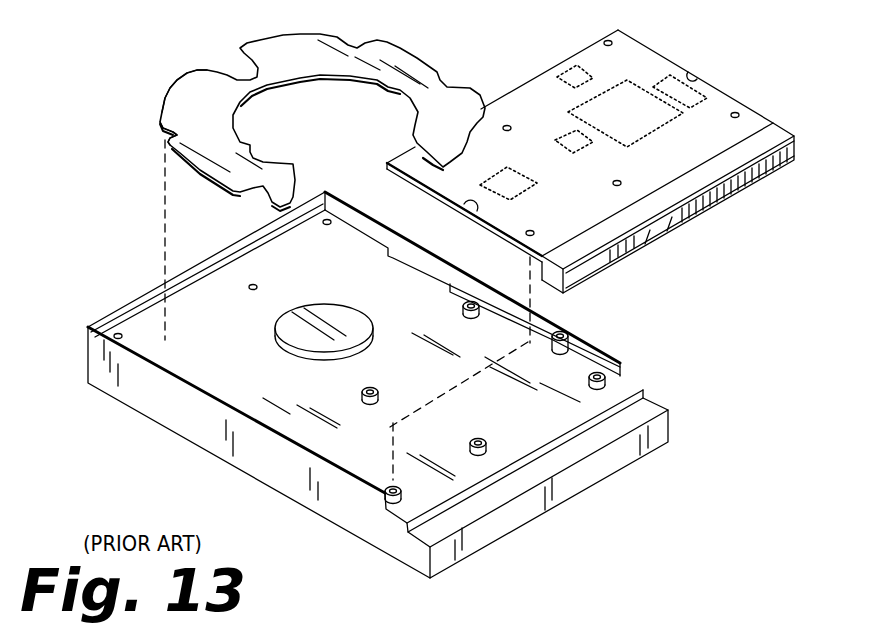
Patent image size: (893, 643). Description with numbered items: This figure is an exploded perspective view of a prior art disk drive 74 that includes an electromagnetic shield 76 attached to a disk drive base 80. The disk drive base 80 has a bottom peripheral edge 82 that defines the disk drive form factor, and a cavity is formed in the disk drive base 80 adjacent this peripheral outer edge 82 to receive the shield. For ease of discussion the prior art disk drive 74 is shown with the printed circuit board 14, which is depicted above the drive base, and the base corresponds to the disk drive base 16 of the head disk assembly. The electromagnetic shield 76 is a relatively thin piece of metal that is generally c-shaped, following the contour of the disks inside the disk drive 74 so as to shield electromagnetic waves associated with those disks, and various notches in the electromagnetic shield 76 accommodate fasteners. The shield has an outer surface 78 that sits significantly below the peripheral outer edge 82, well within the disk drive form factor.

The printed circuit board 14 is at (595, 55).
The disk drive base 16 is at (293, 488).
The prior art disk drive 74 is at (110, 132).
The electromagnetic shield 76 is at (205, 78).
The outer surface 78 is at (176, 104).
The disk drive base 80 is at (138, 323).
The bottom peripheral edge 82 is at (153, 291).